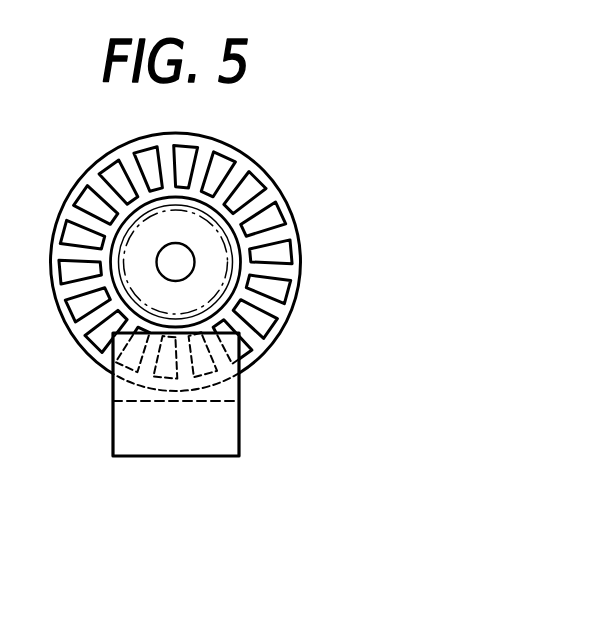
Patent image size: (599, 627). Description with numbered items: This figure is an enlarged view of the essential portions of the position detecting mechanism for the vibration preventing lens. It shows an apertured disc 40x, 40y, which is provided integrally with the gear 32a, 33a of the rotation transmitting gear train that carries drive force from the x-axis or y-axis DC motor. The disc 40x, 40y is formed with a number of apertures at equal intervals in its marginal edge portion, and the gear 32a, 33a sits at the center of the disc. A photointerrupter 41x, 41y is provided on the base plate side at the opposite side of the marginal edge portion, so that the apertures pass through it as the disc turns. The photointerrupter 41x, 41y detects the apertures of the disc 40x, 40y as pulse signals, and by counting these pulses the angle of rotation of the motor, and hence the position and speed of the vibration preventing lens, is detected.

The apertured disc 40x is at (217, 250).
The apertured disc 40y is at (246, 170).
The gear 32a is at (277, 257).
The gear 33a is at (222, 260).
The photointerrupter 41x is at (256, 394).
The photointerrupter 41y is at (239, 388).